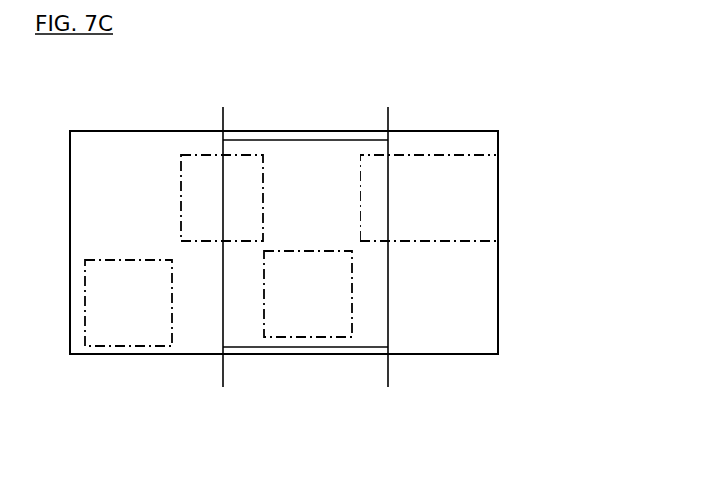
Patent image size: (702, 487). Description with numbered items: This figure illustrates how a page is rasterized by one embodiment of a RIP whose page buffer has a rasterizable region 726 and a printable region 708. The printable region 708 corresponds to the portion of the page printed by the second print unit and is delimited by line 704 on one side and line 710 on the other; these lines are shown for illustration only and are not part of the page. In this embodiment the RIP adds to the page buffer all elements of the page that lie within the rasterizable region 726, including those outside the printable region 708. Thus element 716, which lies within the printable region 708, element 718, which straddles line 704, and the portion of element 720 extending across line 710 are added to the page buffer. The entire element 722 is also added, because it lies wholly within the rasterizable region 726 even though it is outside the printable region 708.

The line 704 is at (222, 128).
The printable region 708 is at (335, 347).
The line 710 is at (388, 124).
The element 716 is at (332, 248).
The element 718 is at (177, 202).
The element 720 is at (483, 155).
The element 722 is at (158, 258).
The rasterizable region 726 is at (70, 195).